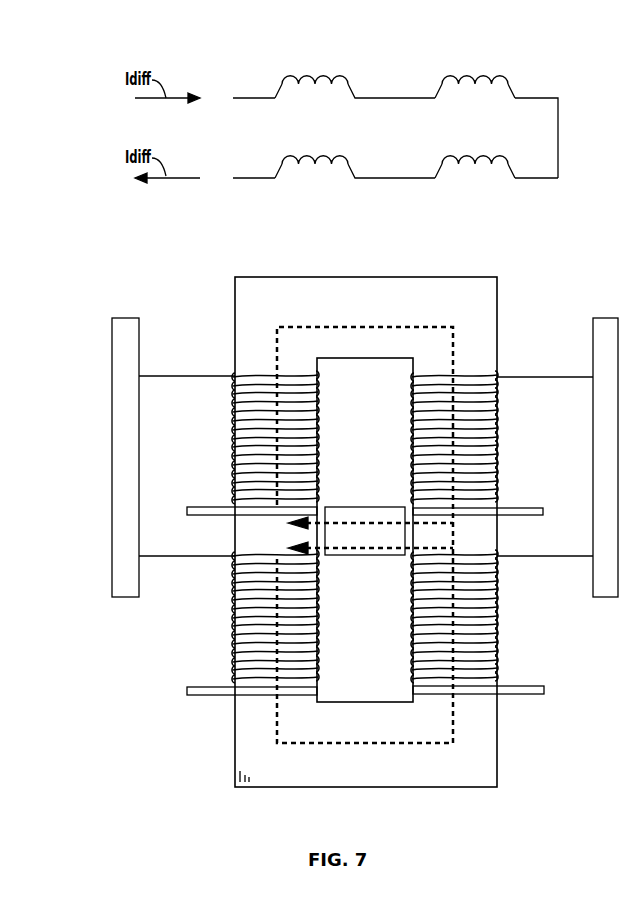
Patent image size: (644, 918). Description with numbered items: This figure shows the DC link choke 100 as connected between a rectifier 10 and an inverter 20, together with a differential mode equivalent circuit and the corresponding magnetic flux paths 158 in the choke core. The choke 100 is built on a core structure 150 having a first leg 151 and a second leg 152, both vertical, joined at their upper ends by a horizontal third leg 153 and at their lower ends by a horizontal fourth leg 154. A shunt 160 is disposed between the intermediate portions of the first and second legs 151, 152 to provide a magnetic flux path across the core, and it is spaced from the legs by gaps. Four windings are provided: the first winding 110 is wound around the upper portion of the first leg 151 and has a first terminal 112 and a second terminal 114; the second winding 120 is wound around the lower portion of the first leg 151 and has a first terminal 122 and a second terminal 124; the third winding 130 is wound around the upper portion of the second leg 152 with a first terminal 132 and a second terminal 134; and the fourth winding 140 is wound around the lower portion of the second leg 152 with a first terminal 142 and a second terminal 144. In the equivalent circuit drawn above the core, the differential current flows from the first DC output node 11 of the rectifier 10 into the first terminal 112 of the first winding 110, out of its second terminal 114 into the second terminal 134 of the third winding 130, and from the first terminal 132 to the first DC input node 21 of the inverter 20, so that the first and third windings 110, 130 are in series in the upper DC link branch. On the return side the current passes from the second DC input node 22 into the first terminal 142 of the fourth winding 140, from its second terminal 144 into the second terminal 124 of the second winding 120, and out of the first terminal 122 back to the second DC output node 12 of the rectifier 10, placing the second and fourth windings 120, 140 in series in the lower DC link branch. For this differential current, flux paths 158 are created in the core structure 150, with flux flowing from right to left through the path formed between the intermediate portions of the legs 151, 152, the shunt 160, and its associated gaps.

The rectifier 10 is at (123, 318).
The first DC output node 11 is at (237, 98).
The second DC output node 12 is at (237, 178).
The inverter 20 is at (605, 318).
The first DC input node 21 is at (556, 98).
The second DC input node 22 is at (556, 178).
The DC link choke 100 is at (215, 262).
The first winding 110 is at (327, 106).
The first terminal of first winding 112 is at (275, 99).
The second terminal of first winding 114 is at (355, 98).
The second winding 120 is at (327, 186).
The first terminal of second winding 122 is at (276, 178).
The second terminal of second winding 124 is at (355, 178).
The third winding 130 is at (487, 106).
The first terminal of third winding 132 is at (518, 100).
The second terminal of third winding 134 is at (435, 98).
The fourth winding 140 is at (487, 188).
The first terminal of fourth winding 142 is at (518, 180).
The second terminal of fourth winding 144 is at (435, 178).
The core structure 150 is at (235, 318).
The first leg 151 is at (271, 548).
The second leg 152 is at (483, 548).
The third leg 153 is at (379, 305).
The fourth leg 154 is at (379, 777).
The flux paths 158 is at (299, 327).
The shunt 160 is at (378, 507).